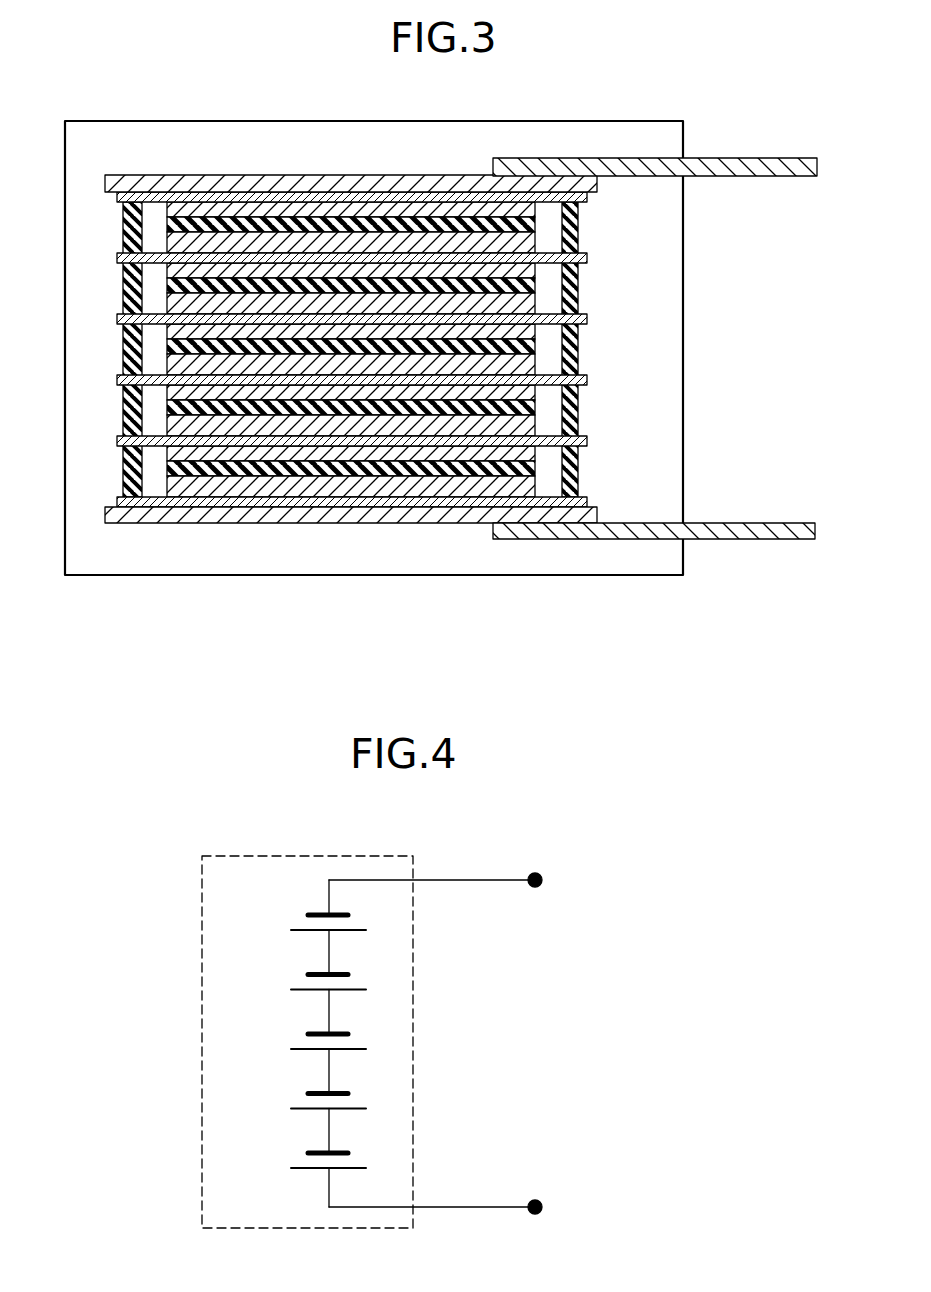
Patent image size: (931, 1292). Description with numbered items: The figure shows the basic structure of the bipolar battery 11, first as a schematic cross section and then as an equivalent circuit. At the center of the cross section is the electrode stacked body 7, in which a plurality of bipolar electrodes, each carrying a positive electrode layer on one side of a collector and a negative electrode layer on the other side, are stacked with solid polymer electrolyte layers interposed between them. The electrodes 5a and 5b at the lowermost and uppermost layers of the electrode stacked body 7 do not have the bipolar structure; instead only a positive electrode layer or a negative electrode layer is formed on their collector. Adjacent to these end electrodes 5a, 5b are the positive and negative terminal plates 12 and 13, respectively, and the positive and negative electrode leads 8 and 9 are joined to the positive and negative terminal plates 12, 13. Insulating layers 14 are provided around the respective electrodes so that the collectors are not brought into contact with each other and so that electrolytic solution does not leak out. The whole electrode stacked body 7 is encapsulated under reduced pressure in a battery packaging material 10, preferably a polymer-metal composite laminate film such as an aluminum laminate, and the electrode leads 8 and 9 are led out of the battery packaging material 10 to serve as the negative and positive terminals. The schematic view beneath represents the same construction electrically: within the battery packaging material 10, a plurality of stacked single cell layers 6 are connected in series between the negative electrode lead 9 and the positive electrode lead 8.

In FIG. 3, the electrode at lowermost layer 5a is at (102, 478).
In FIG. 3, the electrode at uppermost layer 5b is at (102, 193).
In FIG. 4, the single cell layer 6 is at (275, 905).
In FIG. 3, the electrode stacked body 7 is at (100, 334).
In FIG. 3, the positive electrode lead 8 is at (750, 523).
In FIG. 4, the positive electrode lead 8 is at (490, 1207).
In FIG. 3, the negative electrode lead 9 is at (750, 159).
In FIG. 4, the negative electrode lead 9 is at (490, 880).
In FIG. 3, the battery packaging material 10 is at (500, 121).
In FIG. 4, the battery packaging material 10 is at (308, 855).
In FIG. 3, the bipolar battery 11 is at (135, 98).
In FIG. 4, the bipolar battery 11 is at (172, 838).
In FIG. 3, the positive terminal plate 12 is at (305, 525).
In FIG. 3, the negative terminal plate 13 is at (318, 178).
In FIG. 3, the insulating layer 14 is at (128, 236).